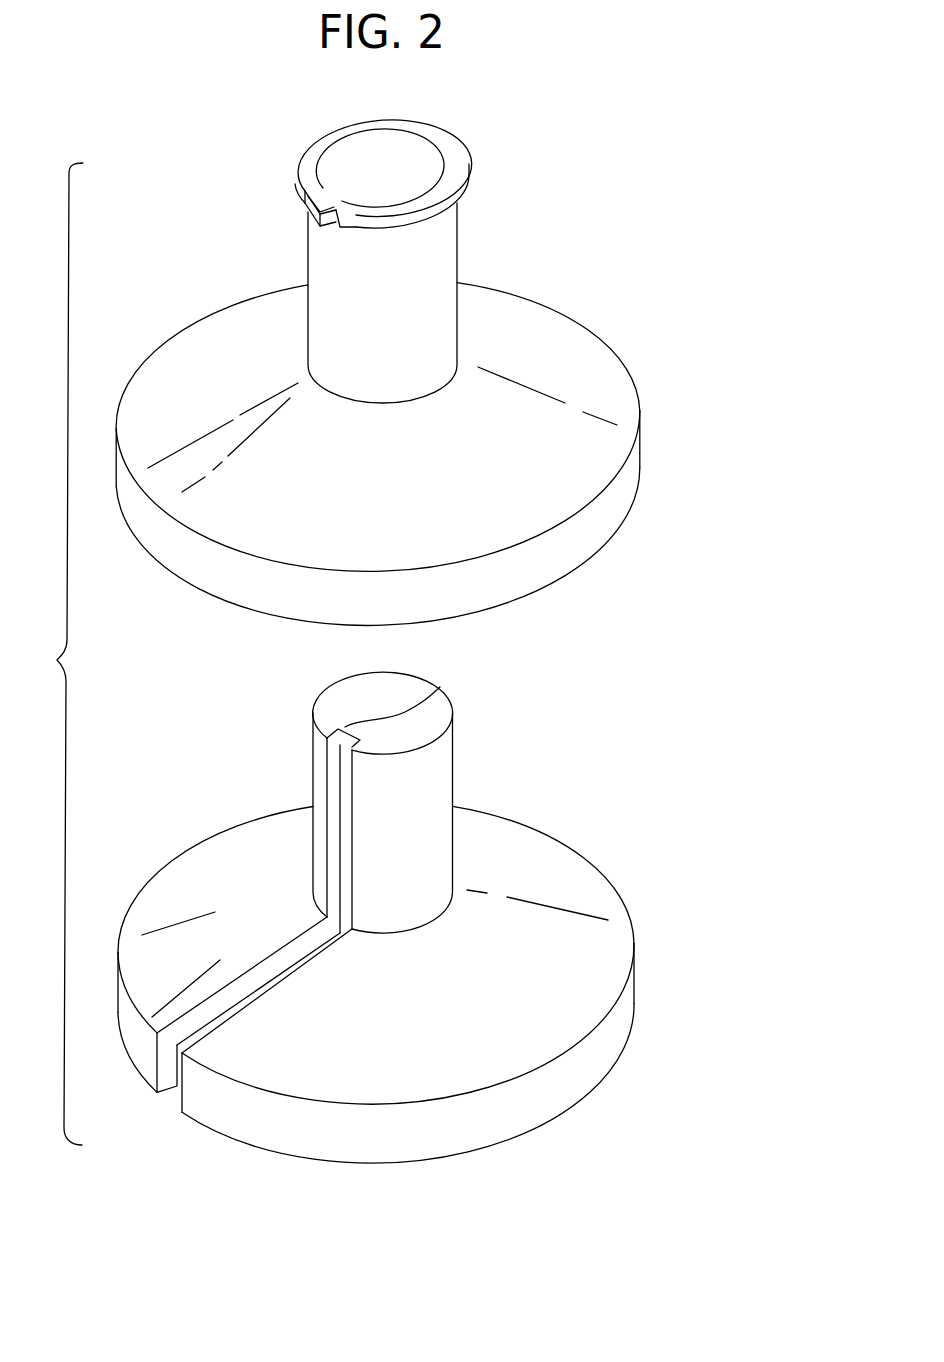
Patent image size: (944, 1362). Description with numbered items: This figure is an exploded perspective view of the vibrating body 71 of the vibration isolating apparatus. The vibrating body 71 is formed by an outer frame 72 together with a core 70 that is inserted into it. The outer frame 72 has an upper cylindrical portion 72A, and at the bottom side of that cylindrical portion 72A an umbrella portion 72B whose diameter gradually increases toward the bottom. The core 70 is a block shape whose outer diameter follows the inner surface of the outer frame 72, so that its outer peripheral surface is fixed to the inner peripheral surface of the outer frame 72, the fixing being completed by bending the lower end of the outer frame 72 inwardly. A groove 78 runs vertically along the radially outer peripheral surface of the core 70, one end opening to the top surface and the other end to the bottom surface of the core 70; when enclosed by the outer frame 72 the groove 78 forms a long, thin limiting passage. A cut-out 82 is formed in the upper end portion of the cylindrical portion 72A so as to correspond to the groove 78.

The core 70 is at (380, 907).
The vibrating body 71 is at (173, 1168).
The outer frame 72 is at (422, 373).
The cylindrical portion 72A is at (445, 253).
The umbrella portion 72B is at (642, 413).
The groove 78 is at (440, 687).
The cut-out 82 is at (308, 223).